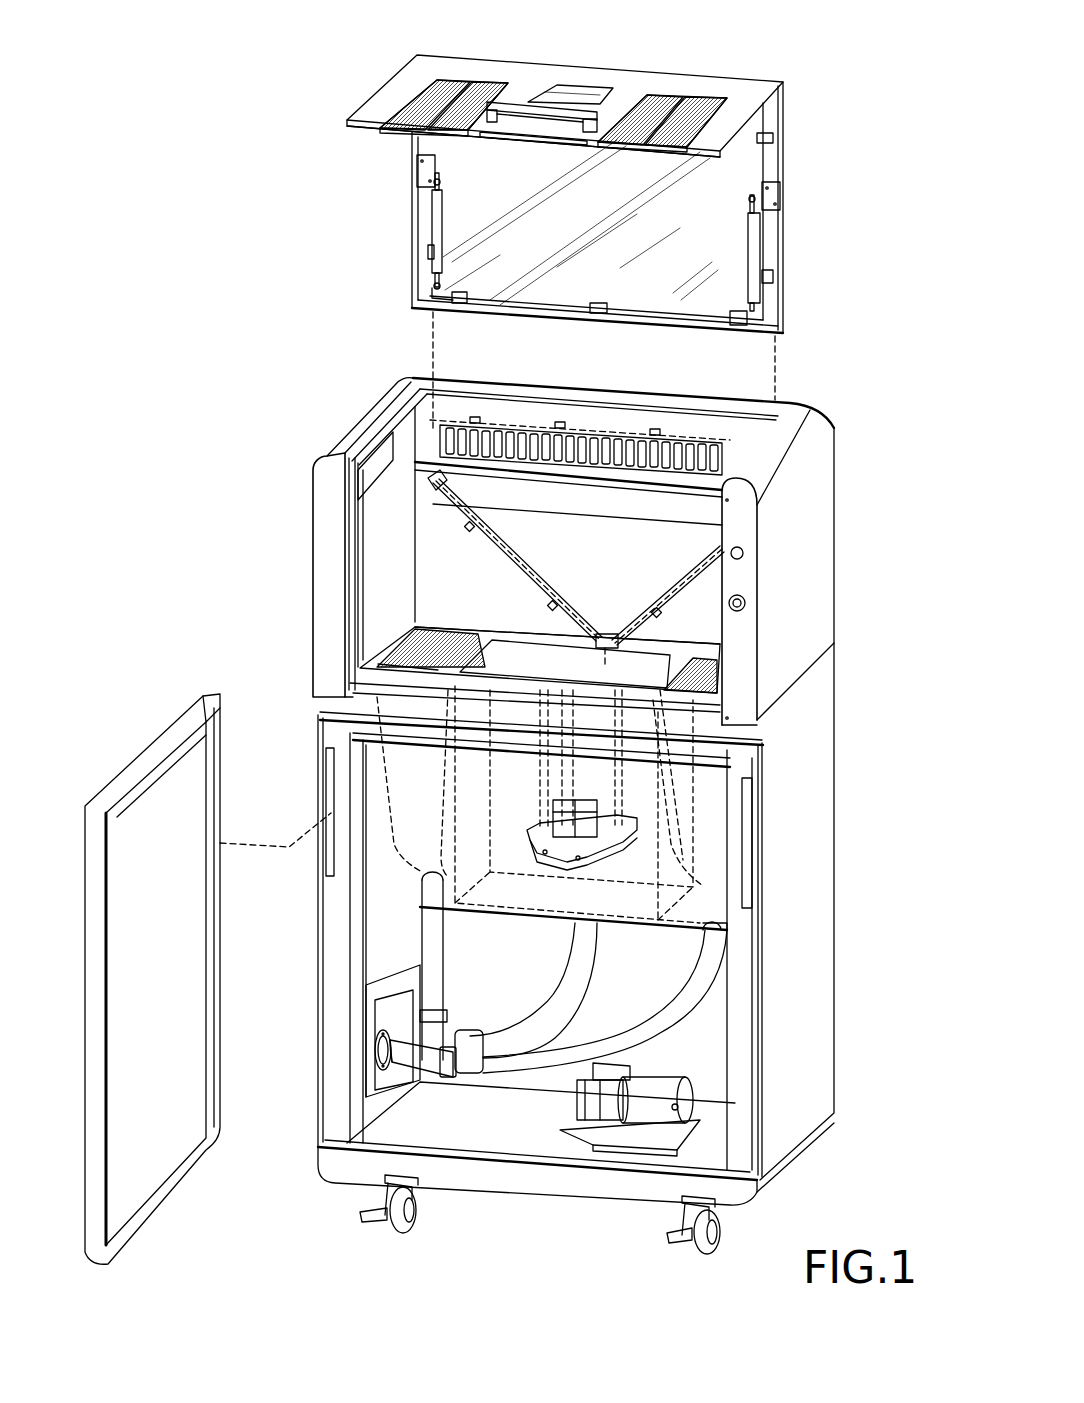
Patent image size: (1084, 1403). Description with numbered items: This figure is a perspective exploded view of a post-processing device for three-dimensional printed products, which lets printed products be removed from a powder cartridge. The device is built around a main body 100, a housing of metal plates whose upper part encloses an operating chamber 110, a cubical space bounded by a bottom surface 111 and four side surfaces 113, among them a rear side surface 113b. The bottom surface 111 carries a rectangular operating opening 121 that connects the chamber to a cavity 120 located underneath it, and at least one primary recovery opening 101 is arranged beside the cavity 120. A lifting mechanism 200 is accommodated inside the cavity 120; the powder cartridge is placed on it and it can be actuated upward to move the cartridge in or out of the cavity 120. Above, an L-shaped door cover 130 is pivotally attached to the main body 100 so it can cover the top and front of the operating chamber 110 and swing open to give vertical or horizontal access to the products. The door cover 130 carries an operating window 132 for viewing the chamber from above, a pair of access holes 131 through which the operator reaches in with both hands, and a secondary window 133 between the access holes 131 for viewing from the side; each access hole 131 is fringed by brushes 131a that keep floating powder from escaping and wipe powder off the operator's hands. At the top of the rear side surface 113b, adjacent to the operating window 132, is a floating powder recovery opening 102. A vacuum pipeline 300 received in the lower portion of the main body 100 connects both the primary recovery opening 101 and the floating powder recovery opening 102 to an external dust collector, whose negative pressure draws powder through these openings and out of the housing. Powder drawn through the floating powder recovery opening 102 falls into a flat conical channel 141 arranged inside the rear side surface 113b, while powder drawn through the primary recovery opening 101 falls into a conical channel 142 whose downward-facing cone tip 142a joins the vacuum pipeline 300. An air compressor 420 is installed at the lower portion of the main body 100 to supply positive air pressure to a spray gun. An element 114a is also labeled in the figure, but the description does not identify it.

The main body 100 is at (316, 451).
The primary recovery opening 101 is at (413, 655).
The floating powder recovery opening 102 is at (658, 446).
The operating chamber 110 is at (394, 497).
The bottom surface 111 is at (680, 643).
The side surfaces 113 is at (373, 540).
The rear side surface 113b is at (438, 566).
The diagonal support arms 114a is at (700, 585).
The cavity 120 is at (667, 852).
The operating opening 121 is at (460, 646).
The door cover 130 is at (398, 227).
The access hole 131 is at (450, 80).
The brush 131a is at (470, 100).
The operating window 132 is at (727, 222).
The secondary window 133 is at (563, 97).
The conical channel 141 is at (471, 424).
The conical channel 142 is at (338, 771).
The cone tip 142a is at (420, 862).
The lifting mechanism 200 is at (610, 900).
The vacuum pipeline 300 is at (438, 1060).
The air compressor 420 is at (645, 1100).